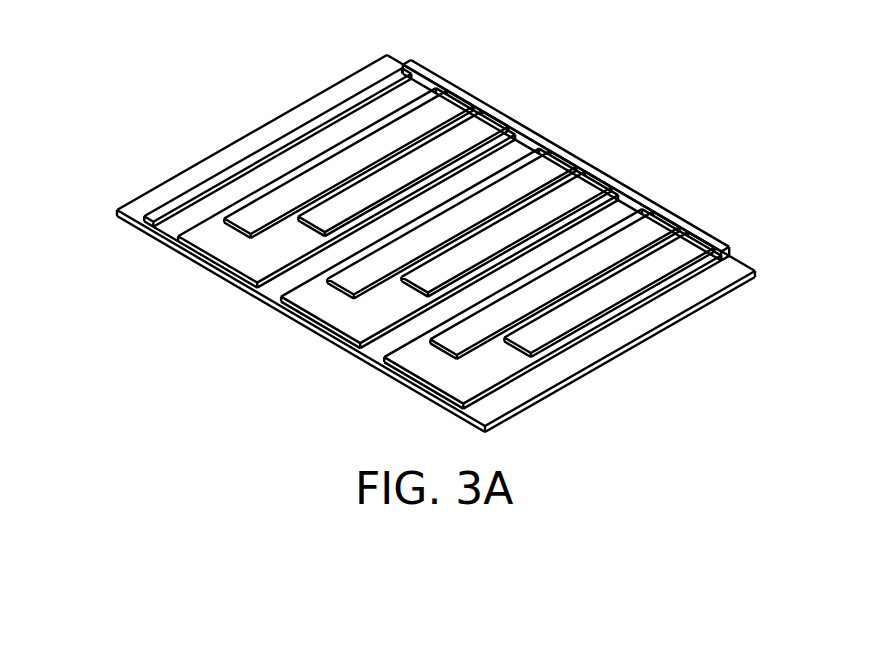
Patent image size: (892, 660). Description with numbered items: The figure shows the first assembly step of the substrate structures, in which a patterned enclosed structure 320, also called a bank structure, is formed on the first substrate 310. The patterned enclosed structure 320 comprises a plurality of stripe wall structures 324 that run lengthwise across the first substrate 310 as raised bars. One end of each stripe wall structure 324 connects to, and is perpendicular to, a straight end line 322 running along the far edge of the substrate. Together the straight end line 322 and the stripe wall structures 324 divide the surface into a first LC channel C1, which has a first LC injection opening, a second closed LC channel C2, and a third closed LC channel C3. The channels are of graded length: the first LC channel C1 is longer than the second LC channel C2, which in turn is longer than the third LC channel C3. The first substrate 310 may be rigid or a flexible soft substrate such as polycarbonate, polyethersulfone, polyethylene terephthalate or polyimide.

The first substrate 310 is at (154, 197).
The patterned enclosed structure 320 is at (461, 231).
The straight end line 322 is at (527, 137).
The stripe wall structure 324 is at (297, 135).
The first LC channel C1 is at (612, 213).
The second closed LC channel C2 is at (643, 238).
The third closed LC channel C3 is at (682, 257).